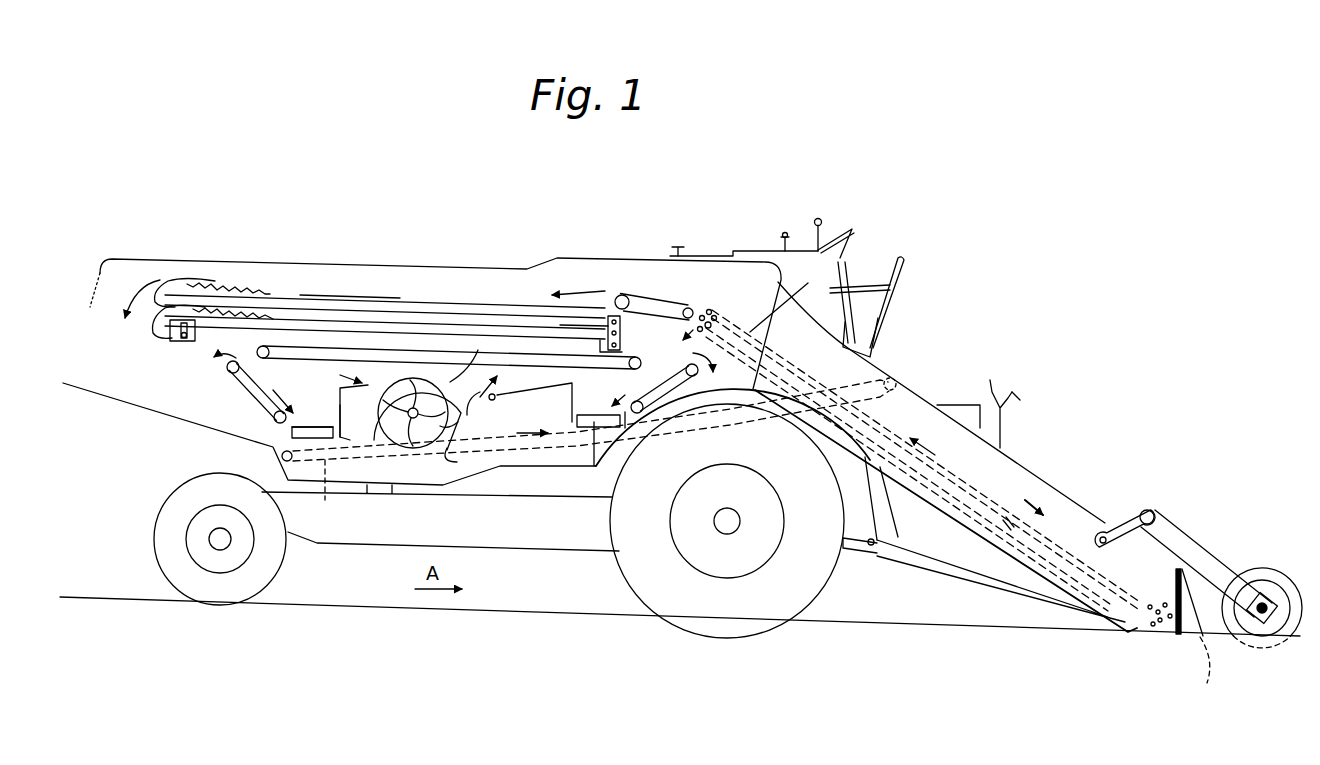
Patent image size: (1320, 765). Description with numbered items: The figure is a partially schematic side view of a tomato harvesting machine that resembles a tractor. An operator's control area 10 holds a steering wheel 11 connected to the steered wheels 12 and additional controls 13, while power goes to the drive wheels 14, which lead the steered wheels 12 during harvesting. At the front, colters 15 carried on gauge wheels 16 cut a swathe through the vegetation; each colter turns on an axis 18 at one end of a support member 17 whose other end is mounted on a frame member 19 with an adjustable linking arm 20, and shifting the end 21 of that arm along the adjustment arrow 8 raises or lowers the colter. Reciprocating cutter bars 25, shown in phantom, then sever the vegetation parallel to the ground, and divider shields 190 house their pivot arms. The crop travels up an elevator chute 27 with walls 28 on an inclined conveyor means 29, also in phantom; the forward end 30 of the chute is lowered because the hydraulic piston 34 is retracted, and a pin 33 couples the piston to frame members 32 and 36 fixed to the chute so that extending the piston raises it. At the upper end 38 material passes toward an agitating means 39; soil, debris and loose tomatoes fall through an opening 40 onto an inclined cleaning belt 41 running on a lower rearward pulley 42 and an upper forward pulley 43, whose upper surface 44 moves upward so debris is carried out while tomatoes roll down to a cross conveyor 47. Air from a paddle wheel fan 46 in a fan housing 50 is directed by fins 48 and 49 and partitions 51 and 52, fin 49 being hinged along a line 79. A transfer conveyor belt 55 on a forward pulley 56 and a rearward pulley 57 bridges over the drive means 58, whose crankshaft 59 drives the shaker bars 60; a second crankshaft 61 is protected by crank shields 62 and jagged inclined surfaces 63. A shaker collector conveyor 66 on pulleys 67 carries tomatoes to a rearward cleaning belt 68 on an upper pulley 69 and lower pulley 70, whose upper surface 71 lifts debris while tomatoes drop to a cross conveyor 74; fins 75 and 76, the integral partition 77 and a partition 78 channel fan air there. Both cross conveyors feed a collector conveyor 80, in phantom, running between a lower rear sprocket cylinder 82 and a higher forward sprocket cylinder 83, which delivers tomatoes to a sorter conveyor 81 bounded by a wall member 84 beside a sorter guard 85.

The direction of travel arrow 8 is at (1040, 503).
The operator's control area 10 is at (734, 252).
The steering wheel 11 is at (853, 229).
The steered wheels 12 is at (262, 587).
The additional controls 13 is at (787, 233).
The drive wheels 14 is at (777, 612).
The colters 15 is at (1274, 572).
The gauge wheels 16 is at (1254, 568).
The support members 17 is at (1193, 545).
The axes 18 is at (1261, 616).
The frame member 19 is at (1158, 540).
The adjustable linking arm 20 is at (1120, 520).
The end of adjustable linking arm 21 is at (1103, 545).
The reciprocating cutter bars 25 is at (1208, 684).
The elevator chute 27 is at (1012, 457).
The walls 28 is at (1045, 468).
The inclined conveyor means 29 is at (1002, 527).
The forward end 30 is at (1137, 630).
The frame member 32 is at (926, 572).
The pin 33 is at (868, 538).
The hydraulic piston 34 is at (842, 556).
The frame member 36 is at (887, 510).
The upper end 38 is at (785, 297).
The agitating means 39 is at (318, 296).
The opening 40 is at (716, 309).
The inclined cleaning belt 41 is at (665, 392).
The lower and rearward pulley 42 is at (624, 394).
The upper and forward pulley 43 is at (694, 355).
The upper surface 44 is at (642, 365).
The paddle wheel fan 46 is at (410, 408).
The cross conveyor 47 is at (594, 468).
The directional fin 48 is at (447, 388).
The directional fin 49 is at (481, 400).
The fan housing 50 is at (457, 461).
The partition 51 is at (553, 392).
The partition 52 is at (633, 428).
The transfer conveyor belt 55 is at (648, 300).
The forward pulley 56 is at (690, 308).
The rearward pulley 57 is at (619, 296).
The drive means 58 is at (622, 324).
The crankshaft 59 is at (606, 328).
The shaker bars 60 is at (372, 323).
The crankshaft 61 is at (172, 336).
The crank shields 62 is at (160, 280).
The jagged inclined surfaces 63 is at (249, 300).
The shaker collector conveyor 66 is at (492, 356).
The pulleys 67 is at (267, 352).
The cleaning belt 68 is at (250, 390).
The upper pulley 69 is at (227, 369).
The lower pulley 70 is at (273, 417).
The upper surface 71 is at (284, 390).
The cross conveyor 74 is at (313, 426).
The fin 75 is at (348, 377).
The fin 76 is at (355, 412).
The partition 77 is at (342, 416).
The partition 78 is at (287, 437).
The line 79 is at (458, 422).
The collector conveyor 80 is at (323, 490).
The sorter conveyor 81 is at (957, 405).
The rear sprocket cylinder 82 is at (282, 457).
The forward sprocket cylinder 83 is at (893, 379).
The wall member 84 is at (989, 386).
The sorter guard 85 is at (1010, 402).
The divider shields 190 is at (1187, 622).